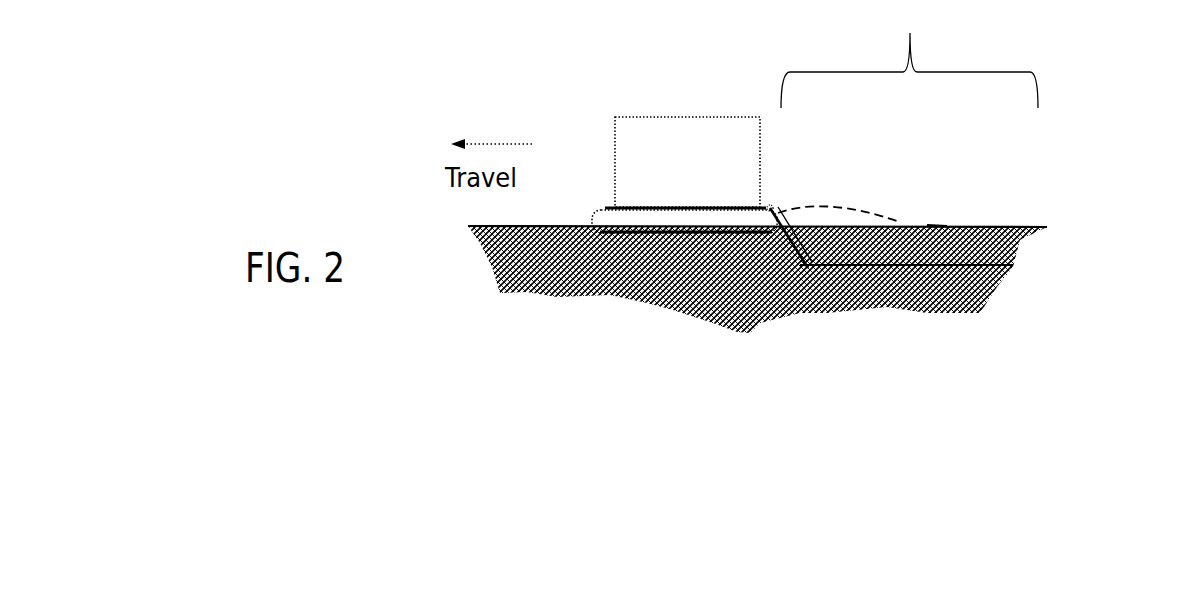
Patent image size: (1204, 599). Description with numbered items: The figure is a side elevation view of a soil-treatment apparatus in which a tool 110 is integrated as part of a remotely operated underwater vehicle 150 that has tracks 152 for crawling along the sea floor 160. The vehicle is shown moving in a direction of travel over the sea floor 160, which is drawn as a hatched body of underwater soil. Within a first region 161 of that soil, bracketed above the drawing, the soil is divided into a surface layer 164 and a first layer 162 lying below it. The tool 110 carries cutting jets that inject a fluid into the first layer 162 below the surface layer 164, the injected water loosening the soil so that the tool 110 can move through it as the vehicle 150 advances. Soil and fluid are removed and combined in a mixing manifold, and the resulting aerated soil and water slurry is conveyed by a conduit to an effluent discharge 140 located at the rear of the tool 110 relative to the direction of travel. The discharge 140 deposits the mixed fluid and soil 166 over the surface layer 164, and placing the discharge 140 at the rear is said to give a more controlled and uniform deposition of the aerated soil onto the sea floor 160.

The tool 110 is at (767, 199).
The effluent discharge 140 is at (774, 209).
The remotely operated underwater vehicle 150 is at (657, 108).
The tracks 152 is at (604, 207).
The sea floor 160 is at (998, 280).
The first region 161 is at (909, 55).
The first layer of soil 162 is at (1010, 255).
The surface layer 164 is at (993, 232).
The mixed fluid and soil 166 is at (852, 206).